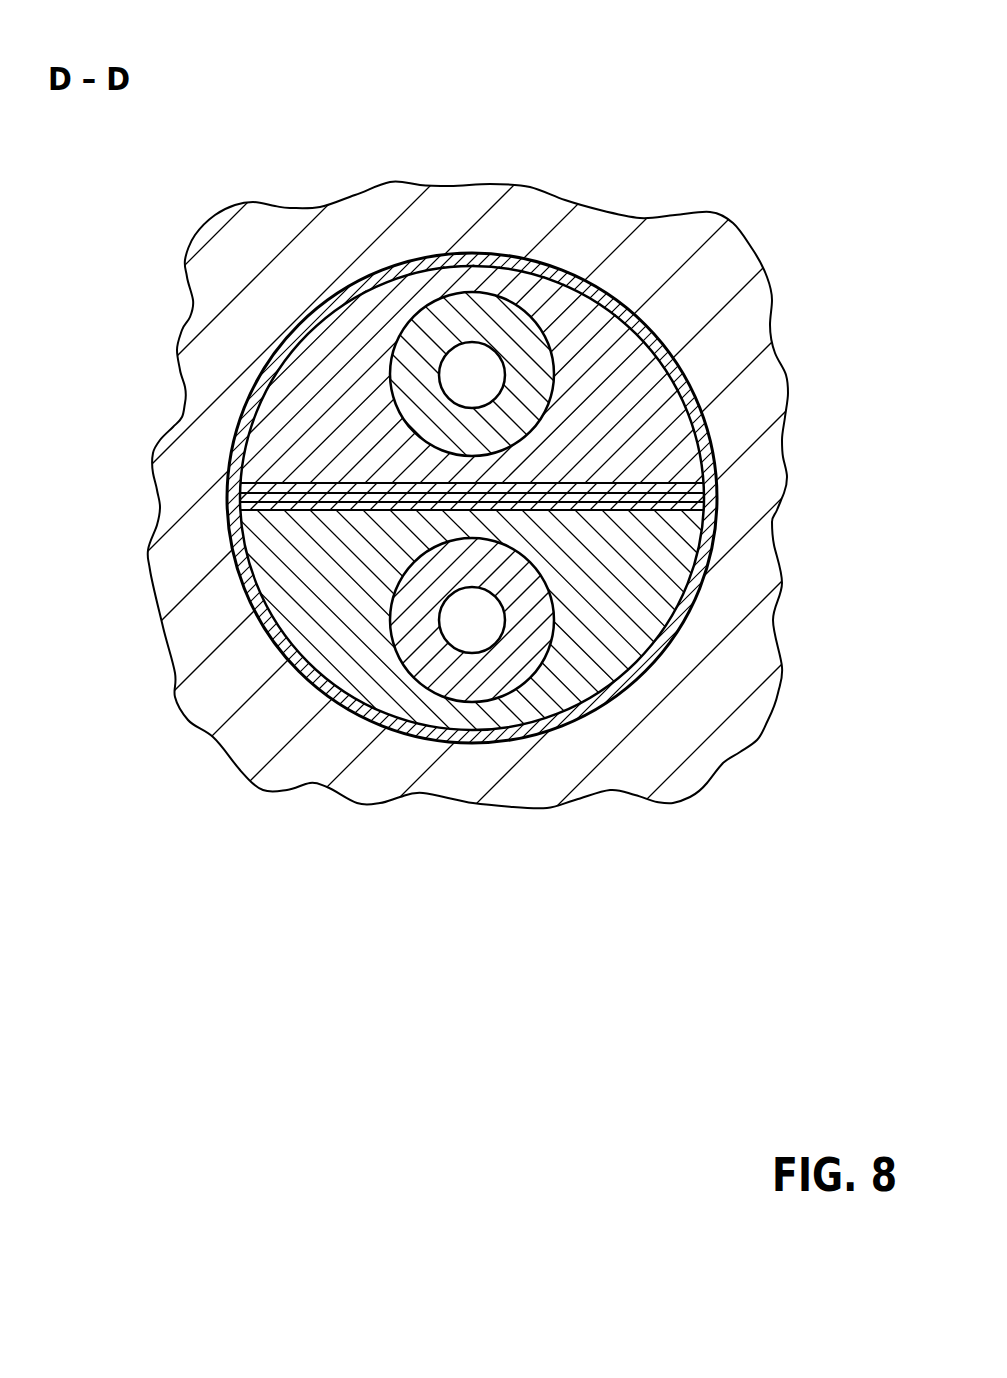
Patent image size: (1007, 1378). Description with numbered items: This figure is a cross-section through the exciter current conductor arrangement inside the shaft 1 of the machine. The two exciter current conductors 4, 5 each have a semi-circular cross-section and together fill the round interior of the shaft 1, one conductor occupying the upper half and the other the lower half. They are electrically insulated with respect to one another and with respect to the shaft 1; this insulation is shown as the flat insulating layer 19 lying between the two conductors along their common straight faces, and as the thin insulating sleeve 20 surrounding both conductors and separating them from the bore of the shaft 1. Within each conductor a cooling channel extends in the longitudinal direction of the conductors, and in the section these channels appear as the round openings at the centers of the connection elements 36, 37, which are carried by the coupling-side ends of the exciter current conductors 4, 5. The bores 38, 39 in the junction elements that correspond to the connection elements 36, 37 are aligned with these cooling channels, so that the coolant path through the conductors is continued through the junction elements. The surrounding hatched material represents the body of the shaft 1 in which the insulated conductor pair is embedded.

The shaft 1 is at (318, 753).
The exciter current conductor 4 is at (328, 597).
The exciter current conductor 5 is at (328, 400).
The insulation 19 is at (683, 498).
The insulation 20 is at (687, 597).
The connection element 36 is at (473, 673).
The connection element 37 is at (512, 337).
The bore 38 is at (472, 619).
The bore 39 is at (472, 375).